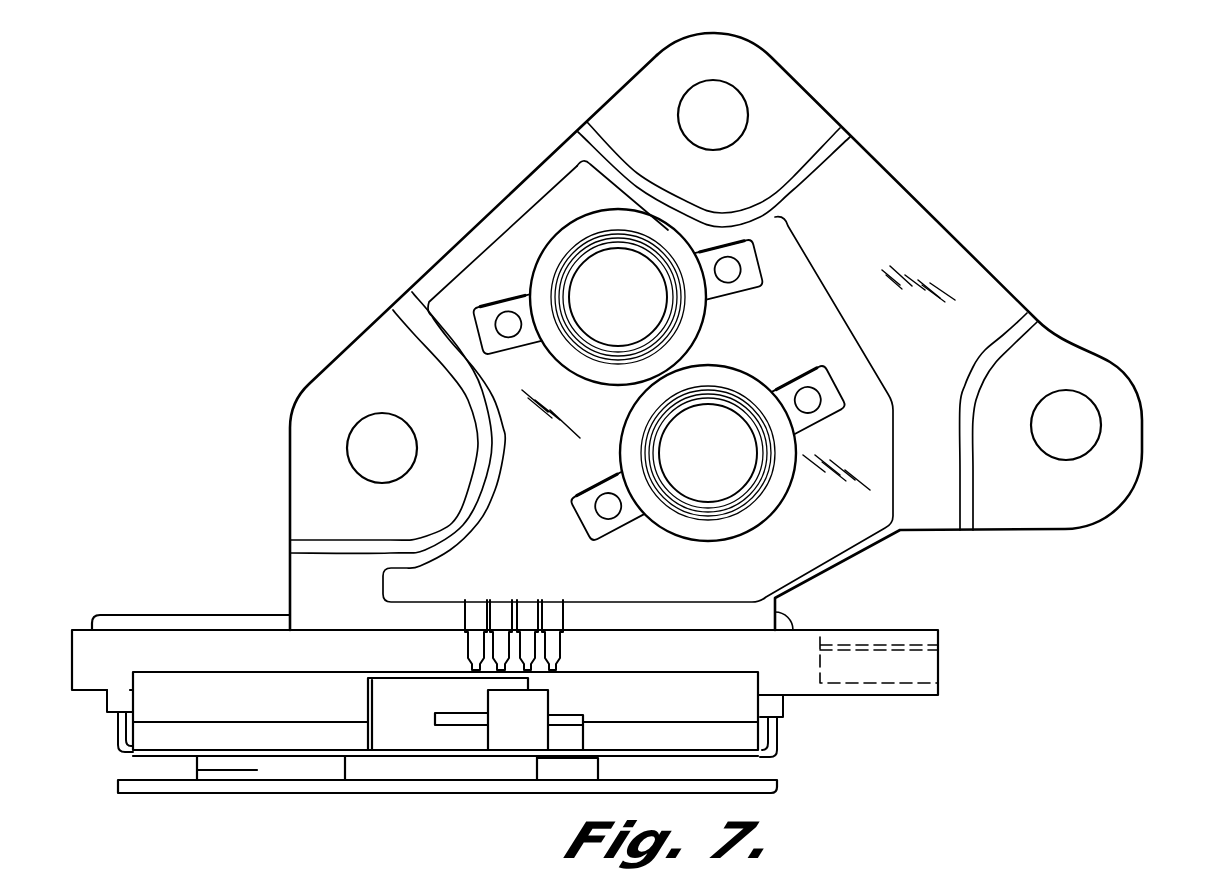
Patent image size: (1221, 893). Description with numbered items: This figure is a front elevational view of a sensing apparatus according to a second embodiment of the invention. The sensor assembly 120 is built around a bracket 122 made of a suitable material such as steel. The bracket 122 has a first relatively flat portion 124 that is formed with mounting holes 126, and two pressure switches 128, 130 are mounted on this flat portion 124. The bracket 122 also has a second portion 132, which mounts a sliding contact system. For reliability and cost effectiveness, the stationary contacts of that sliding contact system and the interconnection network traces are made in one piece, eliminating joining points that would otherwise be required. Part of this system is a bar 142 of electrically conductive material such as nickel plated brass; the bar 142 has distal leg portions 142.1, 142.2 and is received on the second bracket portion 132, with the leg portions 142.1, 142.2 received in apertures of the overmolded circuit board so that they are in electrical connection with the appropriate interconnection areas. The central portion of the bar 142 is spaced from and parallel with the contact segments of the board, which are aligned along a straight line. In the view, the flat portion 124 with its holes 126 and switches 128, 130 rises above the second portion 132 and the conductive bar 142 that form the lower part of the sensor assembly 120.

The sensor assembly 120 is at (746, 351).
The bracket 122 is at (1000, 252).
The first relatively flat portion 124 is at (948, 213).
The mounting holes 126 is at (741, 89).
The pressure switch 128 is at (590, 378).
The pressure switch 130 is at (707, 528).
The second portion of bracket 132 is at (273, 784).
The bar 142 is at (160, 744).
The distal leg portion 142.1 is at (118, 742).
The distal leg portion 142.2 is at (779, 743).